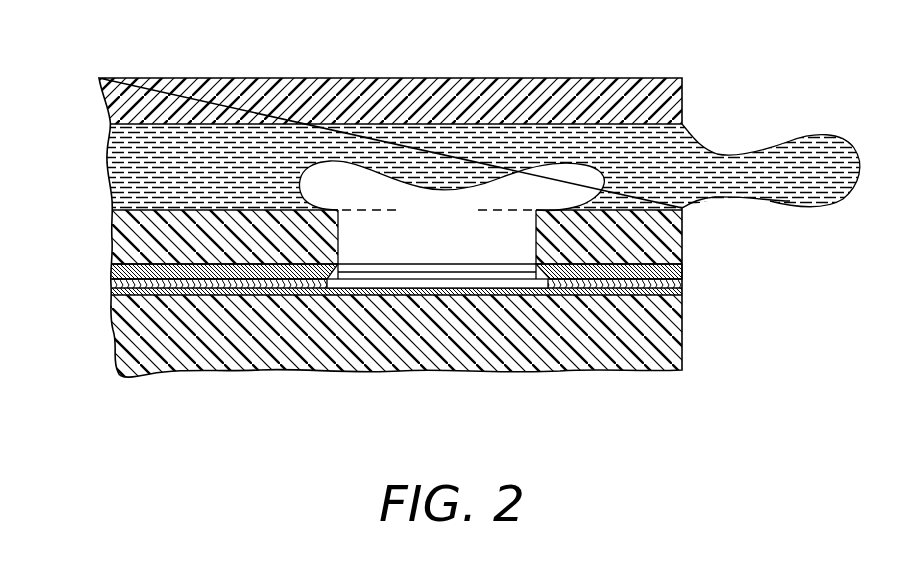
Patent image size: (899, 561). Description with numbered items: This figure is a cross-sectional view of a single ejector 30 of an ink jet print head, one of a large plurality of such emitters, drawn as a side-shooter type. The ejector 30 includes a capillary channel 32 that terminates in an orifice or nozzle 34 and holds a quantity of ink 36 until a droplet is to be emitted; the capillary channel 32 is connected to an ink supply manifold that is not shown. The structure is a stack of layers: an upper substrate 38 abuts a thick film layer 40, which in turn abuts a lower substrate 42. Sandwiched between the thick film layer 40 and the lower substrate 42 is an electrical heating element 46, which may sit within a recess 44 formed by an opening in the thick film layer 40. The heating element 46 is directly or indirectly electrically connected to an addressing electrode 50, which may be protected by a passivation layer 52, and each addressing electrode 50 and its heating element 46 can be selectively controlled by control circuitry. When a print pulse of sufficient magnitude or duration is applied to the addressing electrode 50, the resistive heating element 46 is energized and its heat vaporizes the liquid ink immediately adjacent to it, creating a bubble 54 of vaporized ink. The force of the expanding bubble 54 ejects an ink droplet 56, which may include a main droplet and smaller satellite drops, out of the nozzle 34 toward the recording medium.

The ejector 30 is at (445, 225).
The capillary channel 32 is at (445, 125).
The nozzle 34 is at (684, 133).
The ink 36 is at (449, 148).
The upper substrate 38 is at (633, 50).
The thick film layer 40 is at (110, 248).
The lower substrate 42 is at (427, 337).
The recess 44 is at (341, 232).
The heating element 46 is at (425, 277).
The addressing electrode 50 is at (234, 283).
The passivation layer 52 is at (183, 292).
The bubble 54 is at (509, 254).
The ink droplet 56 is at (820, 134).